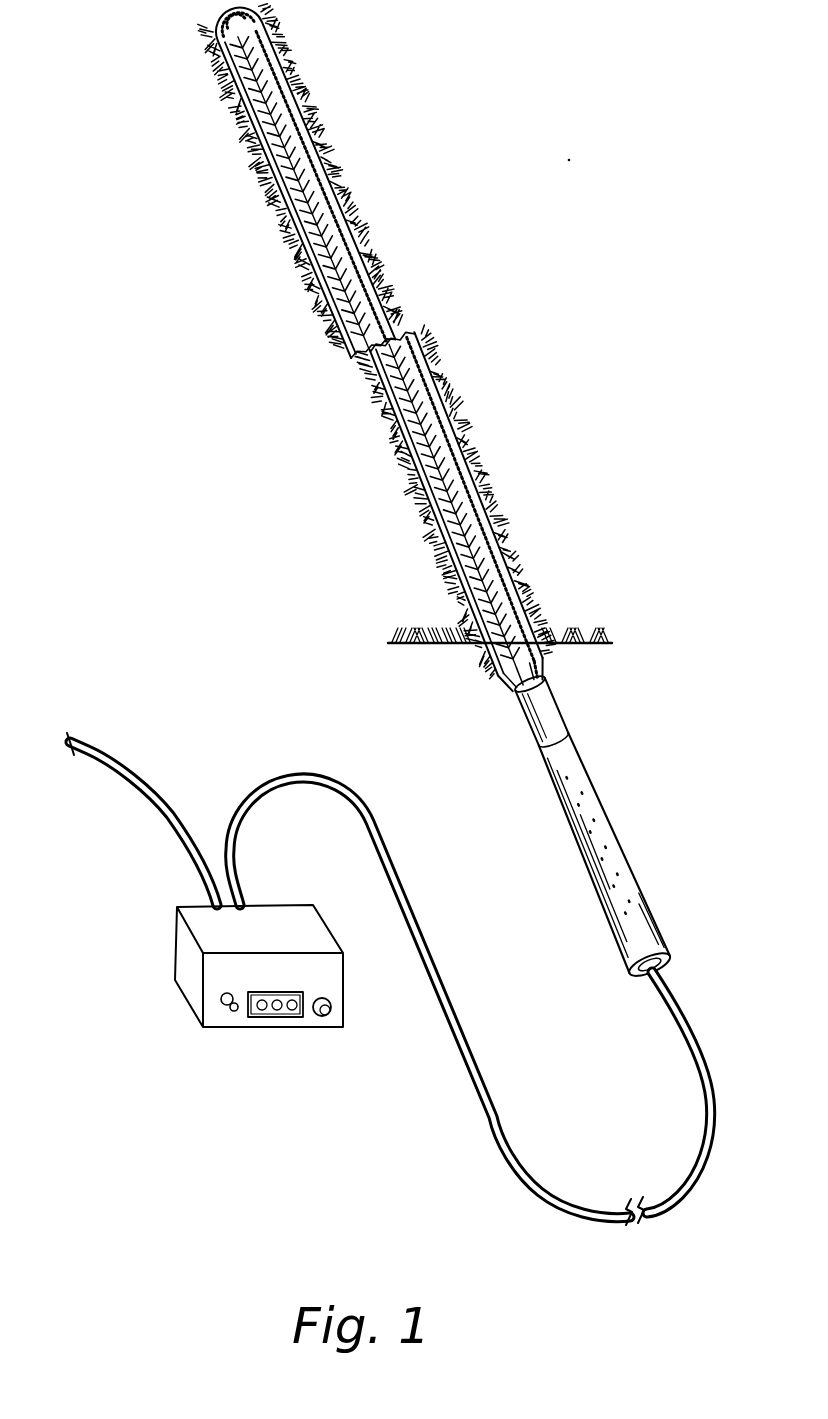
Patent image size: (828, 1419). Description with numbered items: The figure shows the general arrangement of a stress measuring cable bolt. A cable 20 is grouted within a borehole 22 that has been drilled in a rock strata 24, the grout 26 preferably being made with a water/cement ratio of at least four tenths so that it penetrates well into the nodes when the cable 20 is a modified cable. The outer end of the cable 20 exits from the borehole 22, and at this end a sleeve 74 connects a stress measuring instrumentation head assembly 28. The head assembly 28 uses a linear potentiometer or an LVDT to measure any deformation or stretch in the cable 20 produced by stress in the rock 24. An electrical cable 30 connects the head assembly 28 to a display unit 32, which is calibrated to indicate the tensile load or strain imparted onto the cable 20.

The cable 20 is at (402, 402).
The borehole 22 is at (493, 654).
The rock strata 24 is at (563, 628).
The grout 26 is at (335, 165).
The stress measuring instrumentation head assembly 28 is at (617, 816).
The electrical cable 30 is at (490, 1113).
The display unit 32 is at (190, 987).
The sleeve 74 is at (557, 694).